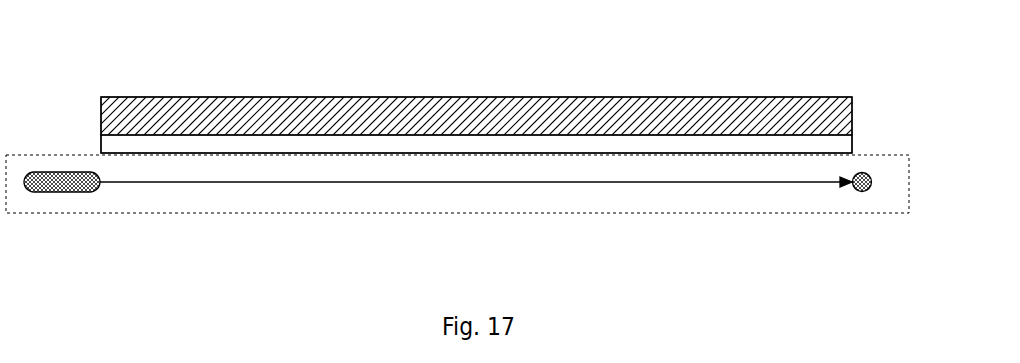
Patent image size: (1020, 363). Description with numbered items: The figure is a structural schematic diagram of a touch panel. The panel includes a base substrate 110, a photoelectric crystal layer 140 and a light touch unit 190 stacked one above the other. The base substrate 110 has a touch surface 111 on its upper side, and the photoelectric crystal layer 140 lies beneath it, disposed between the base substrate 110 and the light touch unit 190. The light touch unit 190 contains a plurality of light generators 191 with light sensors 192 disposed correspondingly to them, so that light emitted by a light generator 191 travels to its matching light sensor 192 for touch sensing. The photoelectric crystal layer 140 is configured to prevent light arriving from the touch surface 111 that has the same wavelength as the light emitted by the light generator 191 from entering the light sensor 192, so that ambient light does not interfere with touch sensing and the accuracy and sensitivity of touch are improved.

The base substrate 110 is at (222, 100).
The touch surface 111 is at (402, 97).
The photoelectric crystal layer 140 is at (530, 142).
The light touch unit 190 is at (857, 157).
The light generator 191 is at (78, 187).
The light sensor 192 is at (863, 190).